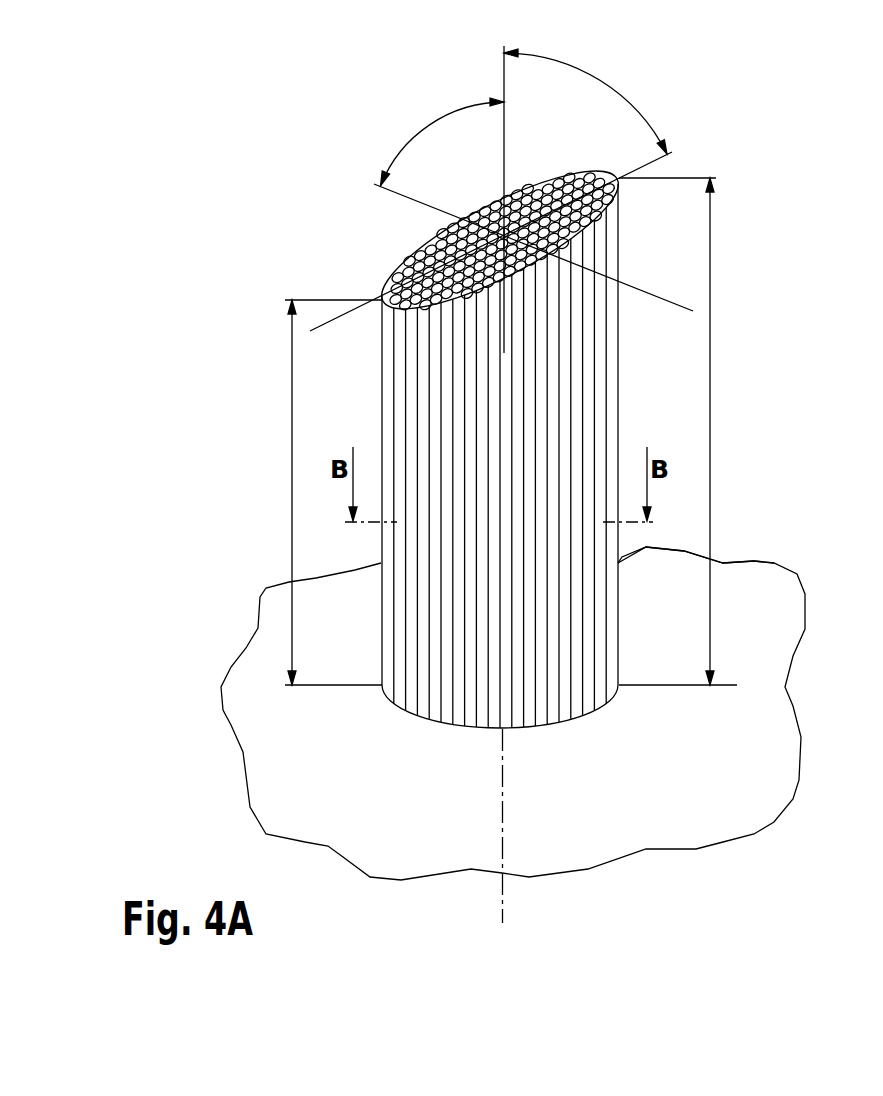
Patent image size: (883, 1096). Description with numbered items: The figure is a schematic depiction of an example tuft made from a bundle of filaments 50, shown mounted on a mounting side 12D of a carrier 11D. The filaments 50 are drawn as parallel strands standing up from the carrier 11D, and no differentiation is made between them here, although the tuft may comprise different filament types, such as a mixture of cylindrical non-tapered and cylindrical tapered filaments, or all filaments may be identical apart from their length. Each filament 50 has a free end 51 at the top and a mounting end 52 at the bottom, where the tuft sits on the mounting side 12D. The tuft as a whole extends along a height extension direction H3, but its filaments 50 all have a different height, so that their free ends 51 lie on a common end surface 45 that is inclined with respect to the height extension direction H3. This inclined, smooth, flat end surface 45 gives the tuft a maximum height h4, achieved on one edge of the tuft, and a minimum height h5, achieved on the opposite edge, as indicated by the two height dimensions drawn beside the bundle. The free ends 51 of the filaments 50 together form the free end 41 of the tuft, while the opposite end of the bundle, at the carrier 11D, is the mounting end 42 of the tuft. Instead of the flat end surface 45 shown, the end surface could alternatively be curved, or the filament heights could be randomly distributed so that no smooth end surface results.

The free end 41 is at (572, 177).
The mounting end 42 is at (621, 713).
The end surface 45 is at (513, 200).
The filaments 50 is at (447, 447).
The free end 51 is at (395, 273).
The mounting end 52 is at (533, 729).
The carrier 11D is at (716, 822).
The mounting side 12D is at (757, 610).
The height extension direction H3 is at (504, 70).
The maximum height h4 is at (683, 431).
The minimum height h5 is at (320, 492).